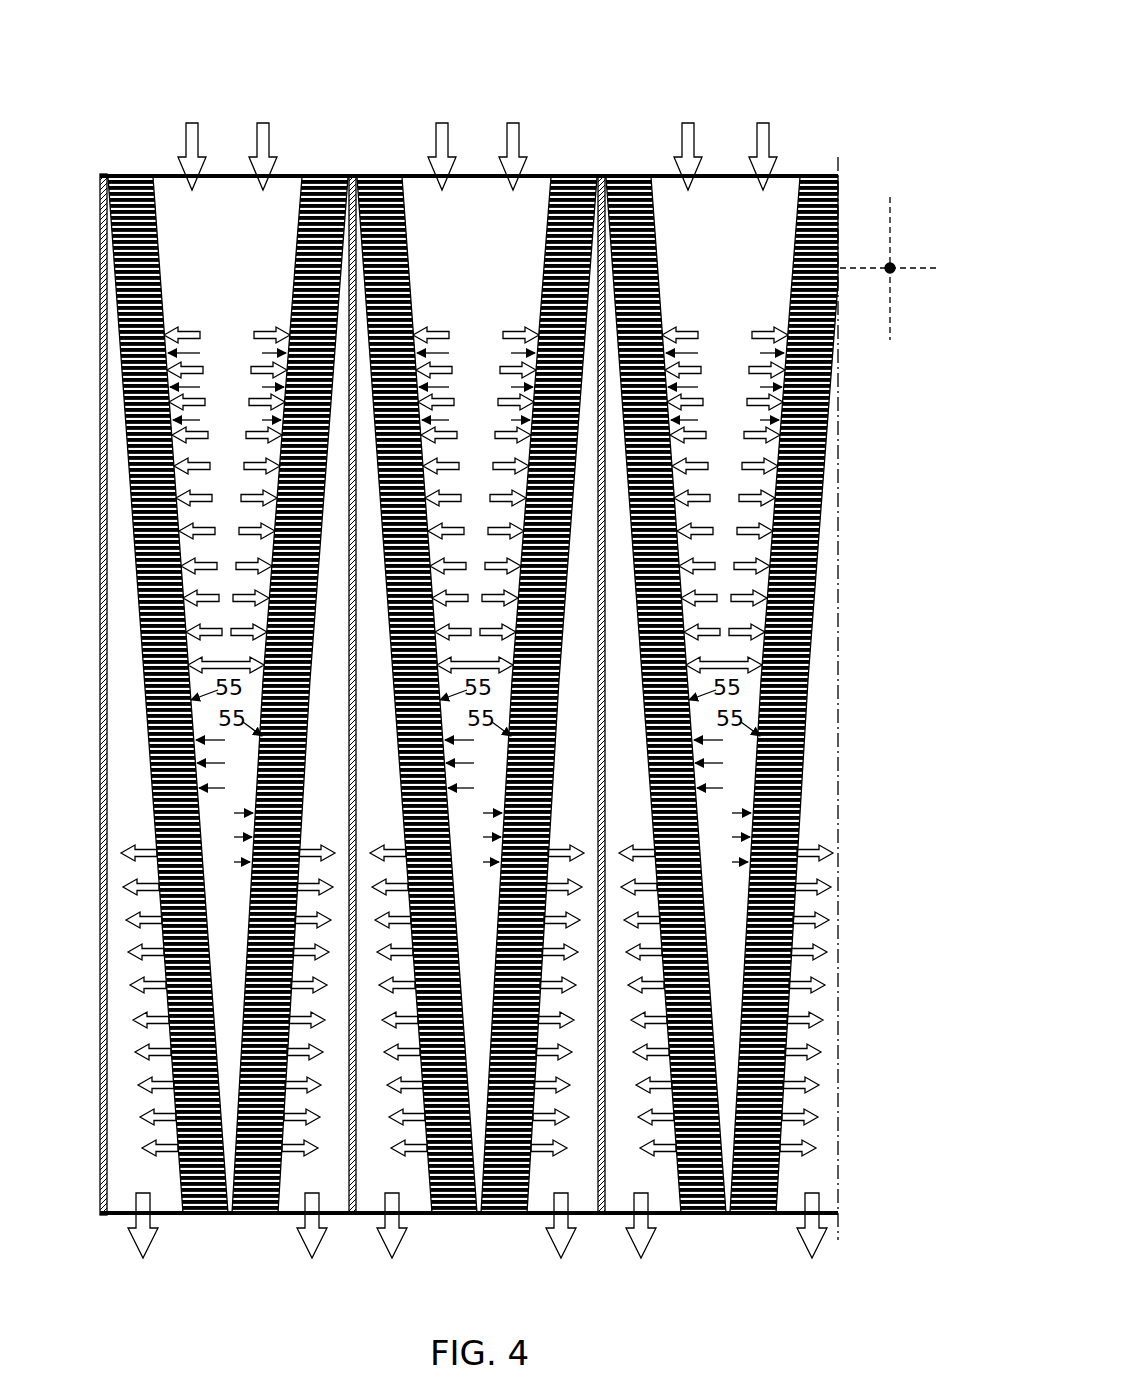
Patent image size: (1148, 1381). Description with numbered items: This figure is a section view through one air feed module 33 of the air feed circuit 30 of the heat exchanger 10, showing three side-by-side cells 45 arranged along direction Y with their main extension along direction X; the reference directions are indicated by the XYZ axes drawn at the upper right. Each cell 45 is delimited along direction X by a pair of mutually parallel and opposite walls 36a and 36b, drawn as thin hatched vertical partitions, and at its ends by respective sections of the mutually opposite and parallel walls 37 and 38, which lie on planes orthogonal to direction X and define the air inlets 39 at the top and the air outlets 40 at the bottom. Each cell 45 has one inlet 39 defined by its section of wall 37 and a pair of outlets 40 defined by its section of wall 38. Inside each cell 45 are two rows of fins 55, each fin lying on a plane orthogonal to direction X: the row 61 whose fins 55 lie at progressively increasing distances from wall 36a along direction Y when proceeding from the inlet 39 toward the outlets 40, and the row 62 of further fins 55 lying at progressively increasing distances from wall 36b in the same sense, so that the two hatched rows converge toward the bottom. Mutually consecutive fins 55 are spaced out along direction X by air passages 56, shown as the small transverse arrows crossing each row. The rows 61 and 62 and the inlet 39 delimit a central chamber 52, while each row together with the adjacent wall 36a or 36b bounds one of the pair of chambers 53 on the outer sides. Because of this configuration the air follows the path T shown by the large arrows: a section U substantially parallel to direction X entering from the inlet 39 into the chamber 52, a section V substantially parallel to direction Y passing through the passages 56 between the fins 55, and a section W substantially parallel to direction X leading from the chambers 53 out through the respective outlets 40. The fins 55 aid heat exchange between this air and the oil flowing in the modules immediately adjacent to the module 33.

The heat exchanger 10 is at (858, 906).
The air feed circuit 30 is at (797, 85).
The air feed module 33 is at (858, 1106).
The wall 36a is at (99, 812).
The wall 36b is at (349, 726).
The wall 37 is at (666, 161).
The wall 38 is at (239, 1232).
The air inlet 39 is at (288, 176).
The air outlet 40 is at (167, 1209).
The cell 45 is at (481, 649).
The chamber 52 is at (224, 213).
The chamber 53 is at (123, 1143).
The fin 55 is at (151, 226).
The air passage 56 is at (476, 608).
The row of fins 61 is at (139, 343).
The row of further fins 62 is at (309, 310).
The path T is at (154, 134).
The section U is at (199, 122).
The section V is at (186, 333).
The section W is at (151, 1244).
The directions X, Y, Z XYZ is at (866, 256).